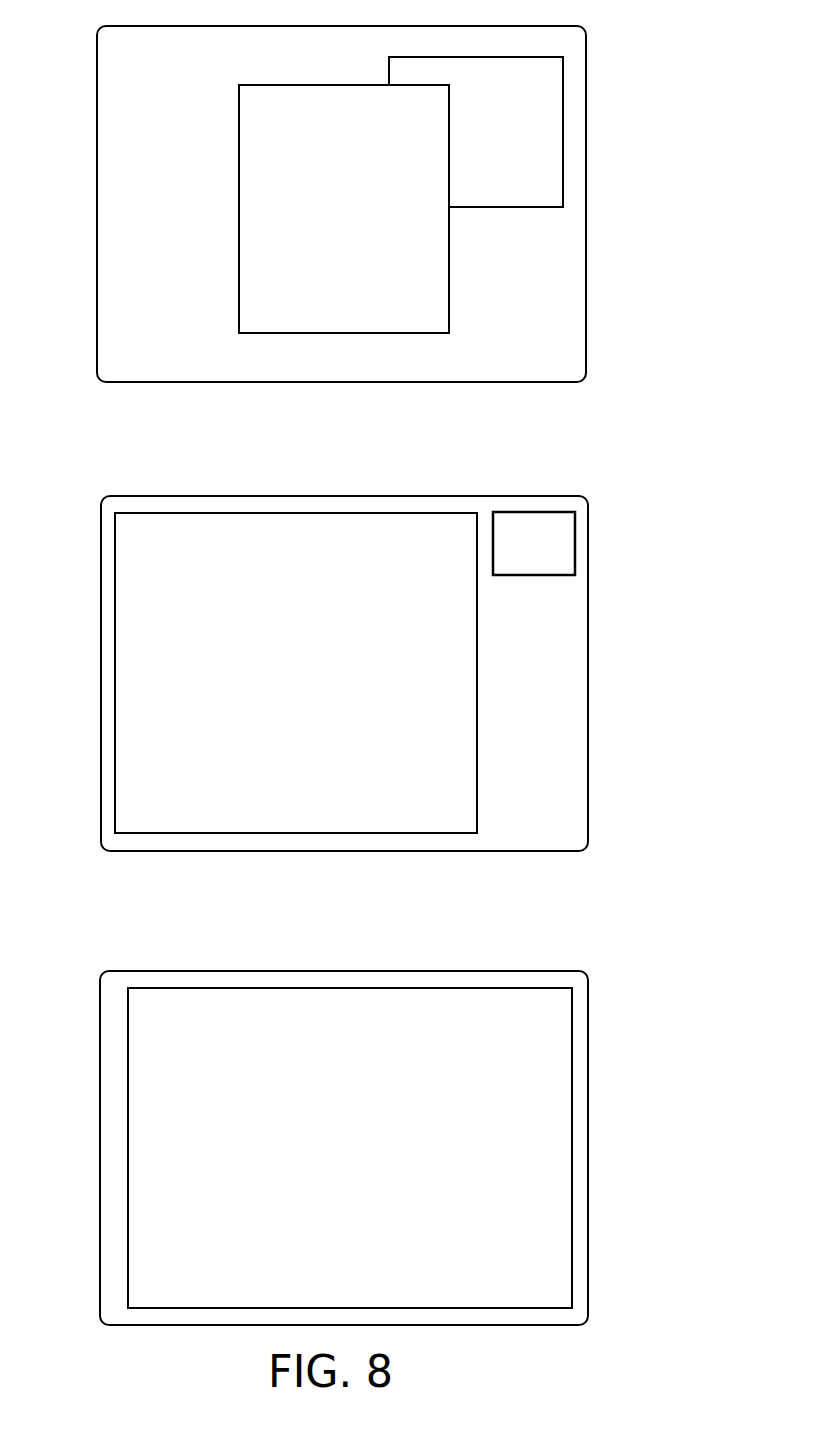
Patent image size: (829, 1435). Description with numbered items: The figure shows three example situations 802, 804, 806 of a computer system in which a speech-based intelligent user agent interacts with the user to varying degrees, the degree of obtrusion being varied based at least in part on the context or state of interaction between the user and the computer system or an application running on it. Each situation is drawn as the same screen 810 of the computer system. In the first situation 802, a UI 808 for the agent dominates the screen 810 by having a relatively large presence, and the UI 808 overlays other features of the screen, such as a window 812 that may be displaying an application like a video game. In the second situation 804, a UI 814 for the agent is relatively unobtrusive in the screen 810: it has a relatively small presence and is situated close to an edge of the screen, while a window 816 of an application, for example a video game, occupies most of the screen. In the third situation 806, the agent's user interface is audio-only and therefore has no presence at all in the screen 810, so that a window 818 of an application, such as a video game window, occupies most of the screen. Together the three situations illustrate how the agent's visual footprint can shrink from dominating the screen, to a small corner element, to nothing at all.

The situation 802 is at (650, 51).
The situation 804 is at (652, 506).
The situation 806 is at (634, 993).
The UI 808 is at (305, 310).
The screen 810 is at (97, 103).
The window 812 is at (546, 96).
The UI 814 is at (551, 551).
The window 816 is at (441, 563).
The window 818 is at (543, 1036).